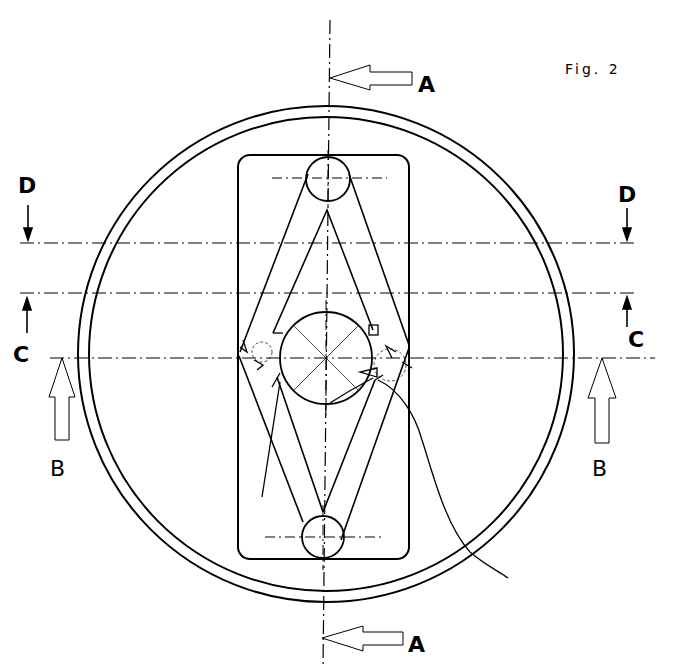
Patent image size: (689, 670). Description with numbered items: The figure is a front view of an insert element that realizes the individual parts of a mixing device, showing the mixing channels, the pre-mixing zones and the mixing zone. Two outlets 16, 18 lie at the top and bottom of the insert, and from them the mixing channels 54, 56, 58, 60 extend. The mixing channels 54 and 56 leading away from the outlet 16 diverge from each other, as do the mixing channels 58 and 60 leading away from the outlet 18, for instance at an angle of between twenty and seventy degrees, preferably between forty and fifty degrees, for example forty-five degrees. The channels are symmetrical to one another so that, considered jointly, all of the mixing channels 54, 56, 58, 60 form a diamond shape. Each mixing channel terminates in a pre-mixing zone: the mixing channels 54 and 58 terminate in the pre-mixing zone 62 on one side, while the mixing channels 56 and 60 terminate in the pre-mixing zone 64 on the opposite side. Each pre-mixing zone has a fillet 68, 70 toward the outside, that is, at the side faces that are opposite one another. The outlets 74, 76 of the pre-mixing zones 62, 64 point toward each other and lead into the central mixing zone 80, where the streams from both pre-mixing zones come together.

The outlet 16 is at (317, 173).
The outlet 18 is at (333, 543).
The mixing channel 54 is at (300, 238).
The mixing channel 56 is at (367, 253).
The mixing channel 58 is at (273, 426).
The mixing channel 60 is at (357, 485).
The pre-mixing zone 62 is at (262, 363).
The pre-mixing zone 64 is at (393, 350).
The fillet 68 is at (247, 350).
The fillet 70 is at (402, 362).
The outlet of pre-mixing zone 74 is at (261, 497).
The outlet of pre-mixing zone 76 is at (376, 325).
The mixing zone 80 is at (395, 358).